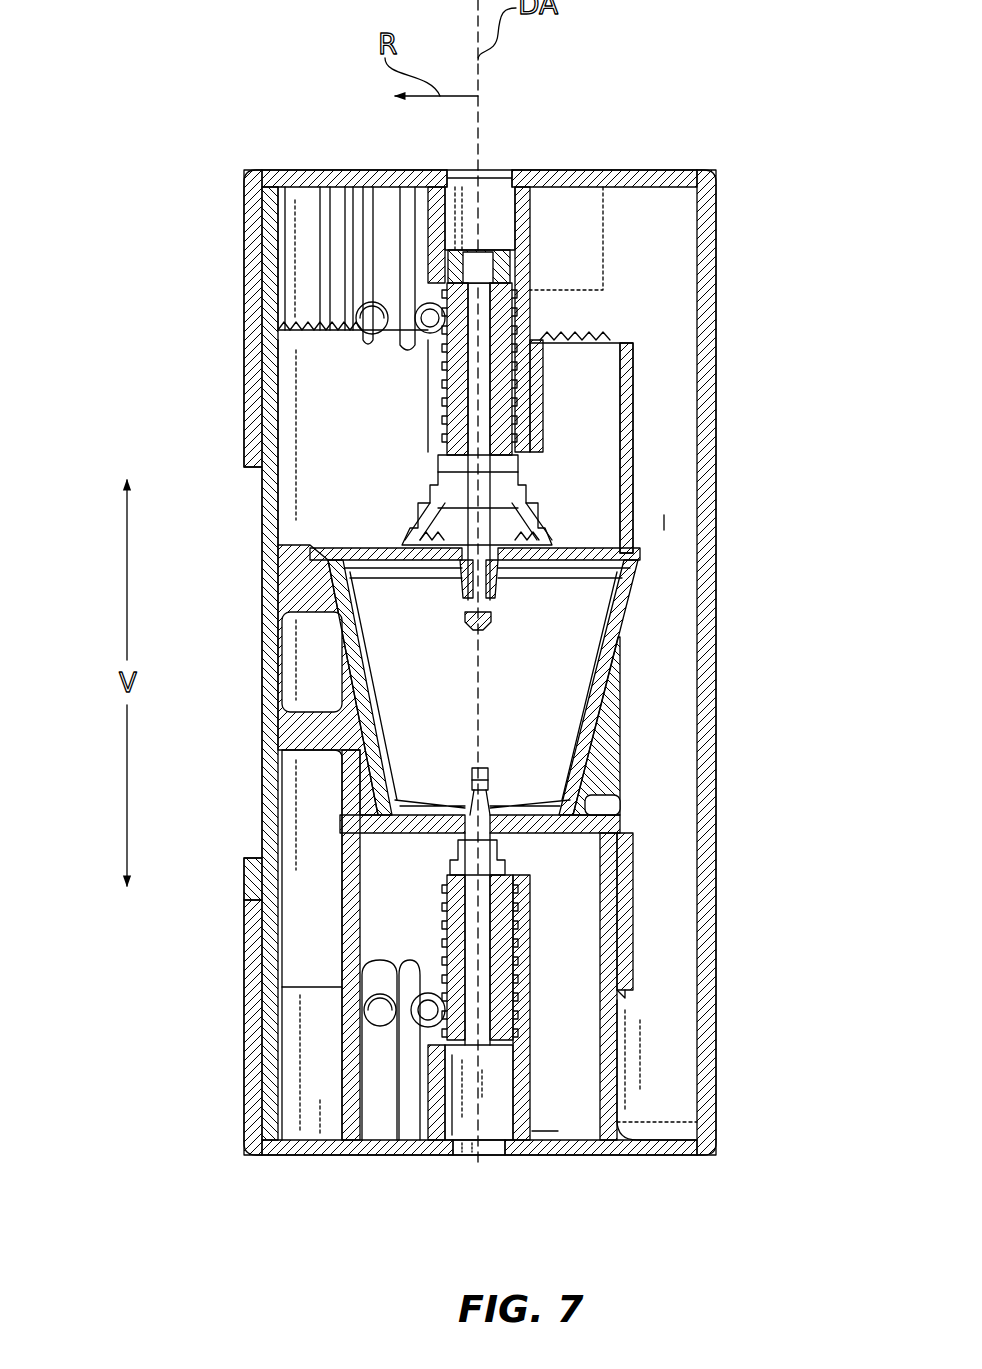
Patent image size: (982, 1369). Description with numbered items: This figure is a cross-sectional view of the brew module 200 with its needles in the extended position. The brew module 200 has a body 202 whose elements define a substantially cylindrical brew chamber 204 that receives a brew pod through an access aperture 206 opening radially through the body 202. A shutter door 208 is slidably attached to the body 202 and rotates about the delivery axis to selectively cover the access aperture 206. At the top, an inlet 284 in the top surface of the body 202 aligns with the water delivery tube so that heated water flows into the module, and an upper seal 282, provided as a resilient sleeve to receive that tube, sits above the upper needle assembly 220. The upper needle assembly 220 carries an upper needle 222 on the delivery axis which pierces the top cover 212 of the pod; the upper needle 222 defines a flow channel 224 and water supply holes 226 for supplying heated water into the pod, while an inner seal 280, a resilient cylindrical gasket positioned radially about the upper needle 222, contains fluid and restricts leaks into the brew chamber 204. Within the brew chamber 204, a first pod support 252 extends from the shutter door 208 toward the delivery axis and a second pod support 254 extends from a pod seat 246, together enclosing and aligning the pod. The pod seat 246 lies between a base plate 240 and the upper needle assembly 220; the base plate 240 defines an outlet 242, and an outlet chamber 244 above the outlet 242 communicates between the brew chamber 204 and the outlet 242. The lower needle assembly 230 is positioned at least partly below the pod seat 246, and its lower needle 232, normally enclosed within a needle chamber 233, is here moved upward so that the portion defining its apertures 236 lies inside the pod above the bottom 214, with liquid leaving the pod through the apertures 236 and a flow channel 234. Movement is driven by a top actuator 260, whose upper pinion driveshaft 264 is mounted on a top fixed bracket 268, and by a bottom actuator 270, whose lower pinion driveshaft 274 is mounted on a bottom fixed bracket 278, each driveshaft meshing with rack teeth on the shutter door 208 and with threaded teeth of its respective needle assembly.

The brew module 200 is at (128, 116).
The body 202 is at (245, 193).
The brew chamber 204 is at (312, 414).
The access aperture 206 is at (253, 868).
The shutter door 208 is at (250, 538).
The top cover 212 is at (568, 550).
The bottom 214 is at (440, 833).
The upper needle assembly 220 is at (588, 380).
The upper needle 222 is at (462, 586).
The flow channel 224 is at (485, 417).
The water supply holes 226 is at (505, 605).
The lower needle assembly 230 is at (570, 893).
The lower needle 232 is at (472, 778).
The needle chamber 233 is at (583, 1063).
The flow channel 234 is at (478, 977).
The apertures 236 is at (500, 790).
The base plate 240 is at (574, 1158).
The outlet 242 is at (455, 1162).
The outlet chamber 244 is at (470, 1095).
The pod seat 246 is at (625, 820).
The first pod support 252 is at (335, 650).
The second pod support 254 is at (597, 722).
The top actuator 260 is at (345, 296).
The upper pinion driveshaft 264 is at (388, 316).
The top fixed bracket 268 is at (372, 262).
The bottom actuator 270 is at (632, 1020).
The lower pinion driveshaft 274 is at (377, 1013).
The bottom fixed bracket 278 is at (377, 972).
The inner seal 280 is at (418, 512).
The upper seal 282 is at (450, 268).
The inlet 284 is at (510, 162).